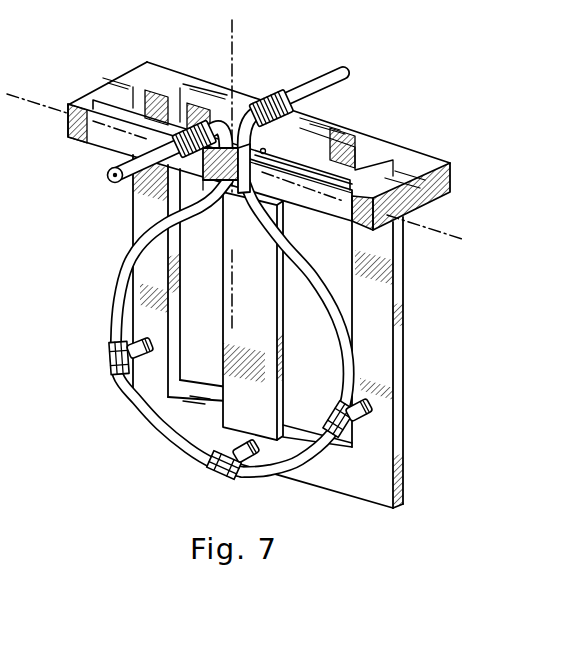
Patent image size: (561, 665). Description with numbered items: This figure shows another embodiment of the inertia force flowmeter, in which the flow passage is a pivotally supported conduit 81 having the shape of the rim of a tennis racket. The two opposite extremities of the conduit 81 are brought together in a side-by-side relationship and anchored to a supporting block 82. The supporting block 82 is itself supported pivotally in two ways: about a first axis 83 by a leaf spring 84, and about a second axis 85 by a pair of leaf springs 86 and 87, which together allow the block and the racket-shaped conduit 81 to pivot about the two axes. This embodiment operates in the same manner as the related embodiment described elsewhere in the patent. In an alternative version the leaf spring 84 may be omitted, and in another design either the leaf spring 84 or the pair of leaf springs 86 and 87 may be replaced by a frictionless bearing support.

The conduit 81 is at (190, 452).
The supporting block 82 is at (137, 207).
The first axis 83 is at (233, 48).
The leaf spring 84 is at (165, 378).
The second axis 85 is at (447, 236).
The leaf spring 86 is at (143, 117).
The leaf spring 87 is at (327, 183).